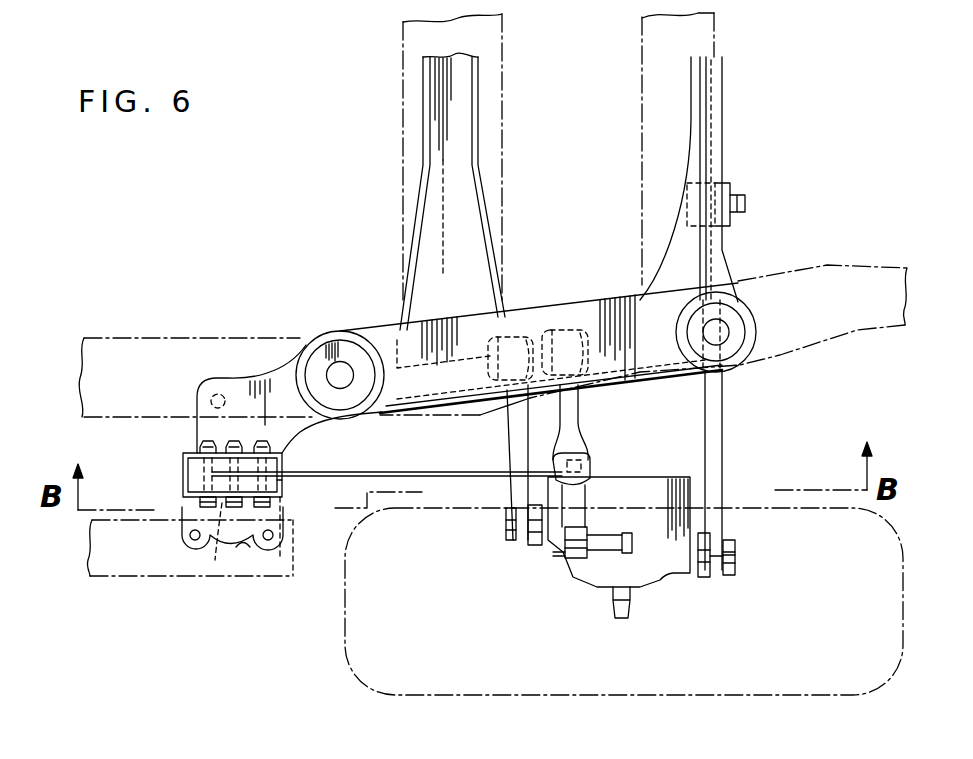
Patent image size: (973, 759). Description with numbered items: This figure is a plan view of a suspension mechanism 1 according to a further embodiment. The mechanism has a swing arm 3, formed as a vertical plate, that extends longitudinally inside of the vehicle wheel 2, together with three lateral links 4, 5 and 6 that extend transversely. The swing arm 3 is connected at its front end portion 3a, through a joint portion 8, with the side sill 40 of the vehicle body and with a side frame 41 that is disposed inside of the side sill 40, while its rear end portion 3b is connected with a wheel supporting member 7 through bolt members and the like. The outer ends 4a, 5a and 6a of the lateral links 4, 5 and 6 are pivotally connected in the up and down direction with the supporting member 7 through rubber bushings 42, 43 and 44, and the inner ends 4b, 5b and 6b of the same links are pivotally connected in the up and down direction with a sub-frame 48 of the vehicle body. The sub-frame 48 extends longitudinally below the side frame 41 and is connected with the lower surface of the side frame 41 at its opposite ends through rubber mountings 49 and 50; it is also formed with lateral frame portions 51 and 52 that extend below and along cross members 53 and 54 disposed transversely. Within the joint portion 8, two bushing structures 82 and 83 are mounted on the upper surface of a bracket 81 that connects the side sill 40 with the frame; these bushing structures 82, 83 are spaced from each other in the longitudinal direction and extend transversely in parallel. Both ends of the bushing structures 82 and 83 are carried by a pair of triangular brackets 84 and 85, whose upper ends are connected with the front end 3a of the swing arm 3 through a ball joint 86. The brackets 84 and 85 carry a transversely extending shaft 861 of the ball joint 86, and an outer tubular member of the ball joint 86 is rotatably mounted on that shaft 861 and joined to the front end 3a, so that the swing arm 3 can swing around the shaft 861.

The suspension mechanism 1 is at (385, 293).
The vehicle wheel 2 is at (905, 576).
The swing arm 3 is at (431, 478).
The front end portion 3a is at (277, 481).
The rear end portion 3b is at (588, 457).
The lateral link 4 is at (578, 417).
The outer end 4a is at (618, 530).
The inner end 4b is at (570, 336).
The lateral link 5 is at (507, 437).
The outer end 5a is at (525, 545).
The inner end 5b is at (515, 338).
The lateral link 6 is at (723, 410).
The outer end 6a is at (740, 548).
The inner end 6b is at (733, 190).
The wheel supporting member 7 is at (663, 578).
The joint portion 8 is at (238, 422).
The side sill 40 is at (142, 578).
The side frame 41 is at (140, 338).
The rubber bushing 42 is at (555, 556).
The rubber bushing 43 is at (508, 530).
The rubber bushing 44 is at (738, 558).
The sub-frame 48 is at (622, 308).
The rubber mounting 49 is at (307, 350).
The rubber mounting 50 is at (750, 356).
The lateral frame portion 51 is at (463, 108).
The lateral frame portion 52 is at (722, 103).
The cross member 53 is at (403, 45).
The cross member 54 is at (714, 35).
The bracket 81 is at (203, 403).
The bushing structure 82 is at (190, 530).
The bushing structure 83 is at (283, 560).
The triangular bracket 84 is at (177, 505).
The triangular bracket 85 is at (197, 447).
The ball joint 86 is at (215, 560).
The shaft 861 is at (243, 550).